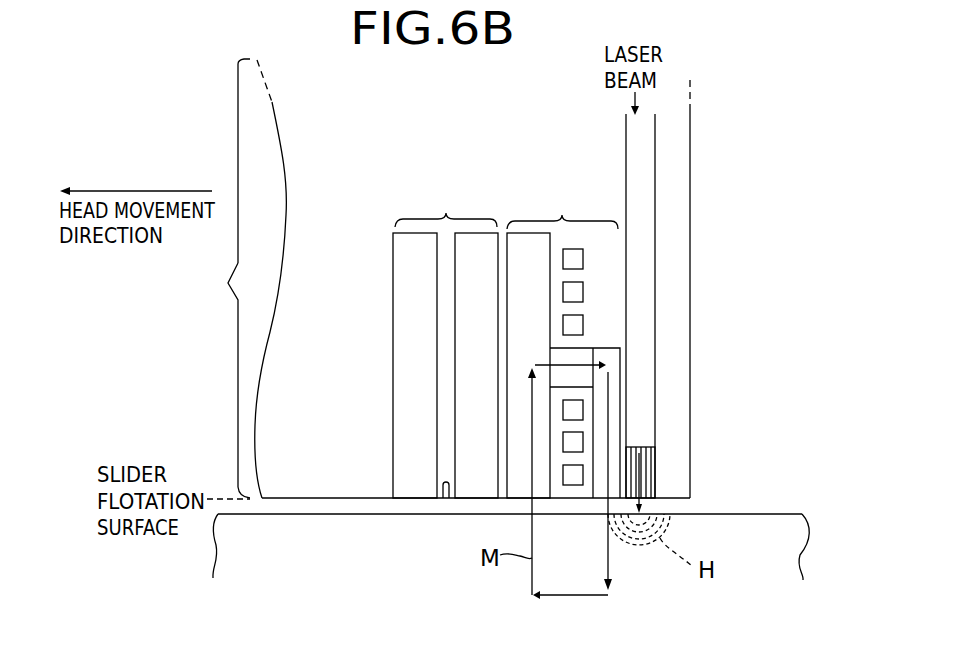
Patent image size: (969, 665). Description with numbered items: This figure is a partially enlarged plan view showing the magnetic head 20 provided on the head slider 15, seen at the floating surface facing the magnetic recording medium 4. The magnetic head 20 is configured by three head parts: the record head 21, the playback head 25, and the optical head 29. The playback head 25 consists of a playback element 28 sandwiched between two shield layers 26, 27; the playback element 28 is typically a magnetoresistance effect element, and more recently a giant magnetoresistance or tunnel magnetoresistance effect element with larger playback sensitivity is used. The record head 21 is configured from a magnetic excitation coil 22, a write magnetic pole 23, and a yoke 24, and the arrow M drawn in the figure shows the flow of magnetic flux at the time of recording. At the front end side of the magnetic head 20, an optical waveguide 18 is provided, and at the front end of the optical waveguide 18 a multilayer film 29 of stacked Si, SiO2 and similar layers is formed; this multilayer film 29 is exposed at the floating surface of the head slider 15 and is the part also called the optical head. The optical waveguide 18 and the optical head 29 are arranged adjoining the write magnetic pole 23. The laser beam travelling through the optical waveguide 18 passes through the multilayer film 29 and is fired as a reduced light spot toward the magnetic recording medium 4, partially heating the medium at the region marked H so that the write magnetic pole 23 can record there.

The magnetic recording medium 4 is at (762, 514).
The head slider 15 is at (698, 154).
The optical waveguide 18 is at (635, 307).
The magnetic head 20 is at (443, 278).
The record head 21 is at (562, 208).
The magnetic excitation coil 22 is at (577, 408).
The write magnetic pole 23 is at (615, 443).
The yoke 24 is at (523, 262).
The playback head 25 is at (446, 207).
The shield layer 26 is at (471, 292).
The shield layer 27 is at (417, 327).
The playback element 28 is at (445, 483).
The multilayer film 29 is at (653, 470).